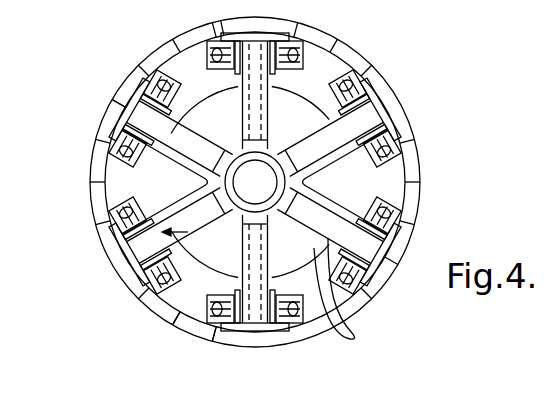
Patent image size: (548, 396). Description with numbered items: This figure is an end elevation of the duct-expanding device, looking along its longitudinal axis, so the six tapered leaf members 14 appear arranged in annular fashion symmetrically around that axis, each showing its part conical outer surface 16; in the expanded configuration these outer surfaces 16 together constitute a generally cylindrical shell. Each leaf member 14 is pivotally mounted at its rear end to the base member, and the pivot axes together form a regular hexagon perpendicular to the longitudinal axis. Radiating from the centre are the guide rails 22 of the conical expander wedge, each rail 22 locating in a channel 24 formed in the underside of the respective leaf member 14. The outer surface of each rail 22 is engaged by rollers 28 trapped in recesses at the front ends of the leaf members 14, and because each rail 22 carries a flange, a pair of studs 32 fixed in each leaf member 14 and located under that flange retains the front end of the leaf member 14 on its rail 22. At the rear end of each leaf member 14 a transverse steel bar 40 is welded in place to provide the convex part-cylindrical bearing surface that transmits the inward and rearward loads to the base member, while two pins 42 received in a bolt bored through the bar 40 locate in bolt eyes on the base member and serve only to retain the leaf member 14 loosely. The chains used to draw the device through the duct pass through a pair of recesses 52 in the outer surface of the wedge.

The leaf member 14 is at (192, 36).
The part conical outer surface 16 is at (328, 23).
The guide rail 22 is at (347, 290).
The channel 24 is at (162, 302).
The roller 28 is at (258, 36).
The stud 32 is at (212, 326).
The transverse steel bar 40 is at (227, 31).
The pin 42 is at (115, 104).
The recess 52 is at (190, 195).